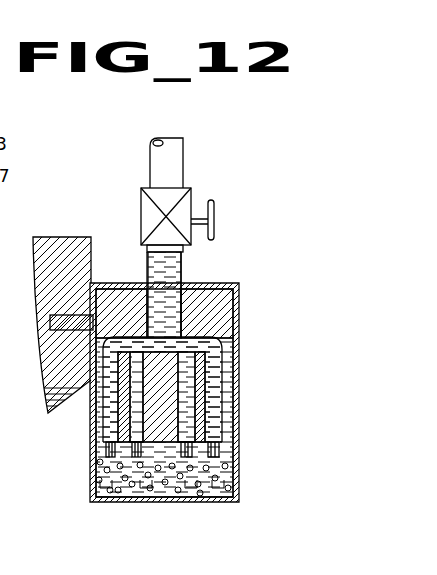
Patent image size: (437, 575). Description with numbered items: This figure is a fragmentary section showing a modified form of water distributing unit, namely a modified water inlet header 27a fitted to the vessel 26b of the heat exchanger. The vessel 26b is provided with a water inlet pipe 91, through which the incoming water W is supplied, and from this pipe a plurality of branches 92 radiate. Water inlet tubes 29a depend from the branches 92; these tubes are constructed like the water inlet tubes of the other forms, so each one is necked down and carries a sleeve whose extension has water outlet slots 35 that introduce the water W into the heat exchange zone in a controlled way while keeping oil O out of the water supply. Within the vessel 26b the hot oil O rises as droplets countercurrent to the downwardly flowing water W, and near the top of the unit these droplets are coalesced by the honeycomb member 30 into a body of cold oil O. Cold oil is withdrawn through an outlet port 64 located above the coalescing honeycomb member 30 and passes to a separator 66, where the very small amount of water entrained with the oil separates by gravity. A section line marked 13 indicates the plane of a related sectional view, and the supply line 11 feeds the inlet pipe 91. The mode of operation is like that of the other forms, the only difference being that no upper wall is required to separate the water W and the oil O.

The supply pipe with valve 11 is at (170, 197).
The water inlet pipe 91 is at (190, 258).
The vessel 26b is at (241, 285).
The separator 66 is at (66, 237).
The outlet port 64 is at (62, 336).
The section line 13 is at (73, 333).
The branches 92 is at (212, 338).
The water inlet header 27a is at (236, 372).
The water inlet tubes 29a is at (130, 424).
The honeycomb member 30 is at (165, 462).
The water outlet slots 35 is at (173, 485).
The oil O is at (122, 322).
The water W is at (157, 298).